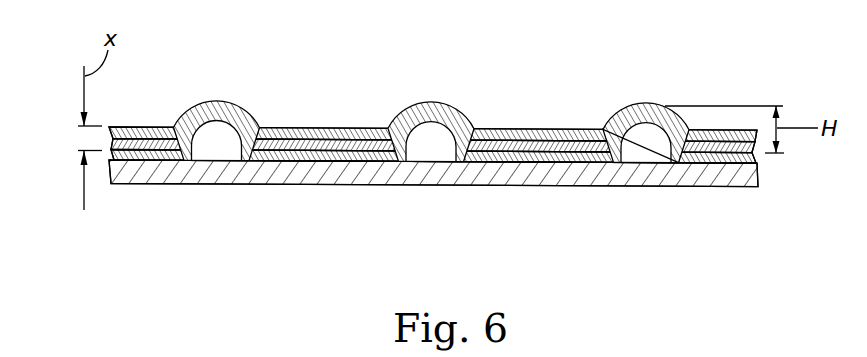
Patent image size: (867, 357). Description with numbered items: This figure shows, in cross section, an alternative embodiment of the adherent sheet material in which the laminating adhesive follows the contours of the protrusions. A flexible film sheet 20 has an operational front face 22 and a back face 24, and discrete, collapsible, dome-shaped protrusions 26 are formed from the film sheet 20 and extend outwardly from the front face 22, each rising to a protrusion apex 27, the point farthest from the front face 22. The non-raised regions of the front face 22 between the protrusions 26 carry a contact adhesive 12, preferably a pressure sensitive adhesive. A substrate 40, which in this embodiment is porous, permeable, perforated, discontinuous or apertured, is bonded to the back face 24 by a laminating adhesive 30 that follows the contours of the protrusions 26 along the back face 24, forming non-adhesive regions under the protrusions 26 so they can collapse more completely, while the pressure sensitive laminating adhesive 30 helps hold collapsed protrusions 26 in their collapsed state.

The contact adhesive 12 is at (310, 137).
The film sheet 20 is at (459, 148).
The front face 22 is at (542, 132).
The back face 24 is at (532, 158).
The protrusions 26 is at (452, 99).
The protrusion apex 27 is at (647, 107).
The laminating adhesive 30 is at (703, 163).
The substrate 40 is at (348, 172).